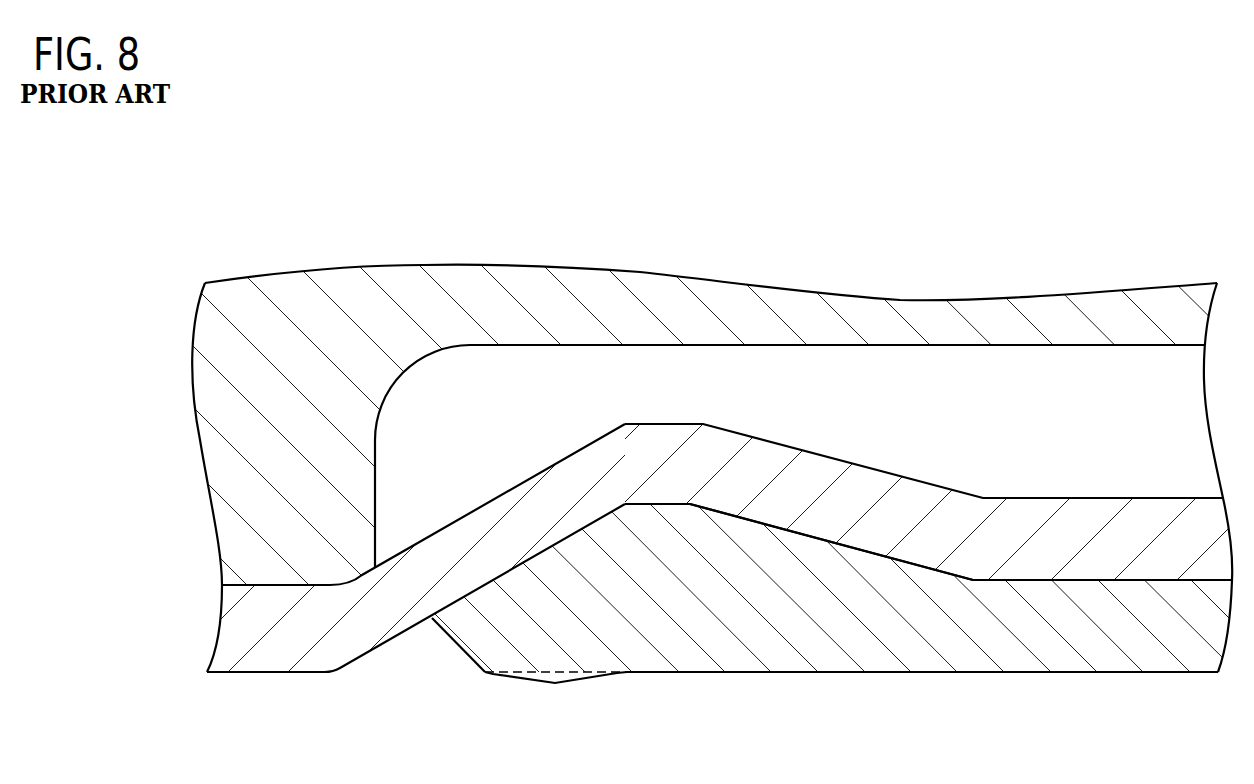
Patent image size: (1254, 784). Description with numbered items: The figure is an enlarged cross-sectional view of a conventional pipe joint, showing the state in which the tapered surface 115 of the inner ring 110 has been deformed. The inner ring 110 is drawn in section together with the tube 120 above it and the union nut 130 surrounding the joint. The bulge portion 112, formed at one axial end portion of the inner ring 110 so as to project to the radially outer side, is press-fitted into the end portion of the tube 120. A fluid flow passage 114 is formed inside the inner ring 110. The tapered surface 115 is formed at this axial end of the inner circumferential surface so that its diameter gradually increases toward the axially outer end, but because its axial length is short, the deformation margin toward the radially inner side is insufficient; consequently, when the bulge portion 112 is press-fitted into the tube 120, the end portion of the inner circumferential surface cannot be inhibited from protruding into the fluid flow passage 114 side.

The union nut 130 is at (528, 290).
The tube 120 is at (470, 528).
The inner ring 110 is at (872, 553).
The bulge portion 112 is at (784, 573).
The fluid flow passage 114 is at (780, 768).
The tapered surface 115 is at (517, 678).